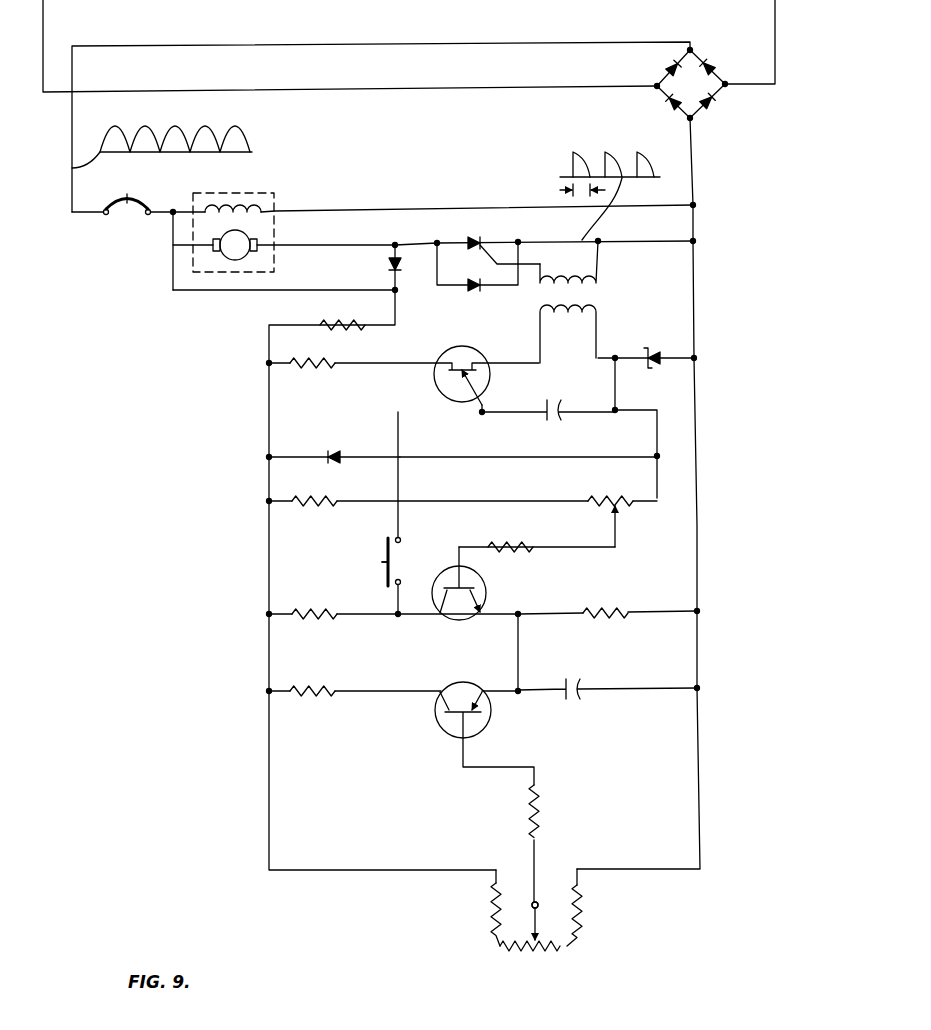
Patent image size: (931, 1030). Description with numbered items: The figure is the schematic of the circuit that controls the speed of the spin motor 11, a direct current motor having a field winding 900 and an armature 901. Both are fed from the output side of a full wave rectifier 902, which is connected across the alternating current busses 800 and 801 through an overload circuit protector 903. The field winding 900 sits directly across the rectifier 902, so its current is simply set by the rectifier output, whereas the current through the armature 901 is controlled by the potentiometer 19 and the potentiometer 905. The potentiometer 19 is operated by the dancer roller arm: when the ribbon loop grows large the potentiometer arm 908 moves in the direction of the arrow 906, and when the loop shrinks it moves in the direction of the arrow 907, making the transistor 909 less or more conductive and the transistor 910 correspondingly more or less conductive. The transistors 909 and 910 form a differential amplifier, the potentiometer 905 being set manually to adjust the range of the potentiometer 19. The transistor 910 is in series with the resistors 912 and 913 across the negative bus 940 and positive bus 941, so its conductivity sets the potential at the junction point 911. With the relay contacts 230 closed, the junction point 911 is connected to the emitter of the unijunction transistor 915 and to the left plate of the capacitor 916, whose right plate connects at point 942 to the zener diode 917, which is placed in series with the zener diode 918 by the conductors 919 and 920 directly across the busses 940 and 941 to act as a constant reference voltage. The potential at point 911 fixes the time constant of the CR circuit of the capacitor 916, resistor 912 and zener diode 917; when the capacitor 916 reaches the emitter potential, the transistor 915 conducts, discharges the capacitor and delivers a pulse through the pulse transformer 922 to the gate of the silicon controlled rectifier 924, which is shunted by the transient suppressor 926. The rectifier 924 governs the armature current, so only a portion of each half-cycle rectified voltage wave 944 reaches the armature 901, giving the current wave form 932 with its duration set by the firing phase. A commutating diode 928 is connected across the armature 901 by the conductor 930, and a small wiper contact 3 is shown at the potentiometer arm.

The alternating current bus 800 is at (43, 15).
The alternating current bus 801 is at (775, 40).
The full wave rectifier 902 is at (670, 95).
The half-cycle rectified voltage wave 944 is at (182, 120).
The overload circuit protector 903 is at (118, 198).
The spin motor 11 is at (213, 193).
The field winding 900 is at (249, 192).
The armature 901 is at (243, 233).
The conductor 930 is at (233, 290).
The commutating diode 928 is at (390, 265).
The silicon controlled rectifier 924 is at (475, 236).
The transient suppressor 926 is at (478, 296).
The pulse transformer 922 is at (592, 294).
The current wave form 932 is at (606, 160).
The zener diode 917 is at (646, 350).
The conductor 920 is at (617, 393).
The unijunction transistor 915 is at (434, 383).
The capacitor 916 is at (540, 428).
The zener diode 918 is at (341, 451).
The conductor 919 is at (418, 457).
The reference point 942 is at (614, 412).
The positive bus 941 is at (269, 430).
The potentiometer 905 is at (617, 494).
The negative bus 940 is at (697, 525).
The switch actuator 230 is at (386, 548).
The transistor 910 is at (487, 590).
The resistor 912 is at (308, 619).
The junction point 911 is at (396, 620).
The resistor 913 is at (602, 617).
The transistor 909 is at (490, 729).
The arrow 907 is at (477, 919).
The potentiometer arm 908 is at (530, 916).
The arrow 906 is at (592, 926).
The potentiometer 19 is at (534, 967).
The contact 3 is at (539, 904).